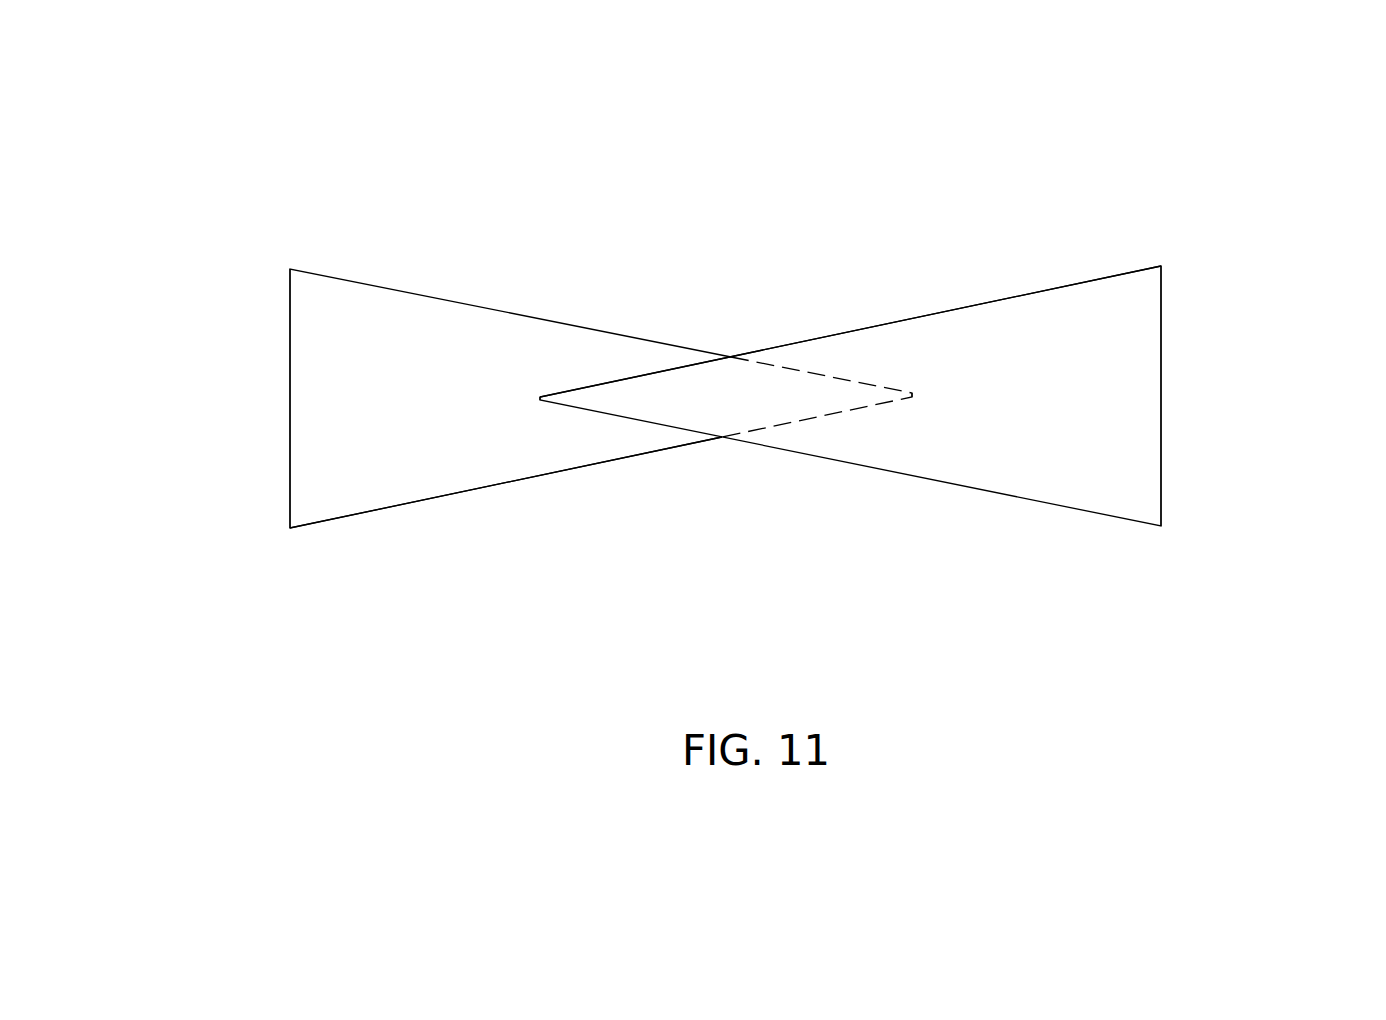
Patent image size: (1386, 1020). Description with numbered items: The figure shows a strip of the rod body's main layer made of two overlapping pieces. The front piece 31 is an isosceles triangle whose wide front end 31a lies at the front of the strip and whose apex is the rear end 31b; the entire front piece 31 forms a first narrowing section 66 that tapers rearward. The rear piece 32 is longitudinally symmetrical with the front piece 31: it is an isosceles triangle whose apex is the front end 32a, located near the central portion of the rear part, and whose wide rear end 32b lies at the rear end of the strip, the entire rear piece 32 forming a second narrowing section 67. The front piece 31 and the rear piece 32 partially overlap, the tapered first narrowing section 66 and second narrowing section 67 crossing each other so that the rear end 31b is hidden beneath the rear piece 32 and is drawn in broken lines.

The front piece 31 is at (397, 289).
The rear piece 32 is at (1043, 290).
The front end of the front piece 31a is at (290, 398).
The rear end of the front piece 31b is at (912, 396).
The front end of the rear piece 32a is at (540, 397).
The rear end of the rear piece 32b is at (1162, 370).
The first narrowing section 66 is at (522, 479).
The second narrowing section 67 is at (866, 328).